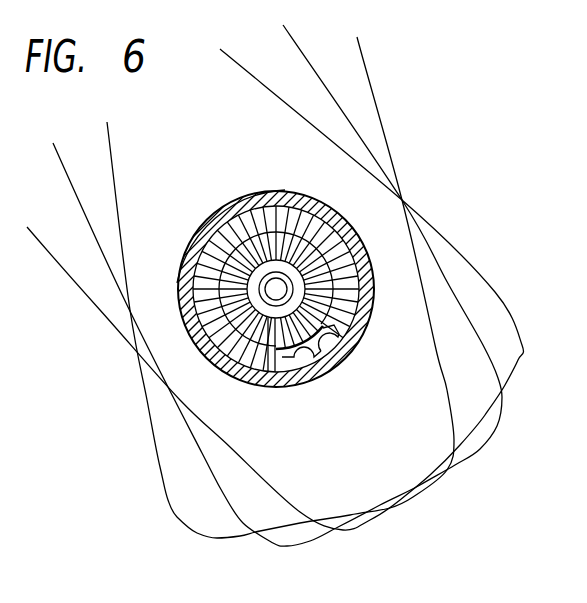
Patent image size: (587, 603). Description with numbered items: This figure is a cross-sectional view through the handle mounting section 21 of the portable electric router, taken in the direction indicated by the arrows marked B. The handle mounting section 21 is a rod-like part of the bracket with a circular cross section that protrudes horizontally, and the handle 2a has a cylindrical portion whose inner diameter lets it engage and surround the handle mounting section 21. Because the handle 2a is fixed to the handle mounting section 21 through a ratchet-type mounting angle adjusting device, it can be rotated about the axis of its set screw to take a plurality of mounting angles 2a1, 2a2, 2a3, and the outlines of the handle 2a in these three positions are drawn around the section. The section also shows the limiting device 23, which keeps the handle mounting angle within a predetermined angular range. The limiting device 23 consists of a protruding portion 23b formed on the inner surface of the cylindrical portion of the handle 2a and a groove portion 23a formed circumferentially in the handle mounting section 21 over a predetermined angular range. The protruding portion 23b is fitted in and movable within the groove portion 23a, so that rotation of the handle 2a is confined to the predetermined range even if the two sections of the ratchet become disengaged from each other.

The handle 2a is at (207, 217).
The mounting angle 2a1 is at (383, 125).
The mounting angle 2a2 is at (318, 72).
The mounting angle 2a3 is at (265, 83).
The handle mounting section 21 is at (287, 192).
The limiting device 23 is at (338, 393).
The groove portion 23a is at (342, 340).
The protruding portion 23b is at (312, 360).
The section line B- B is at (214, 311).